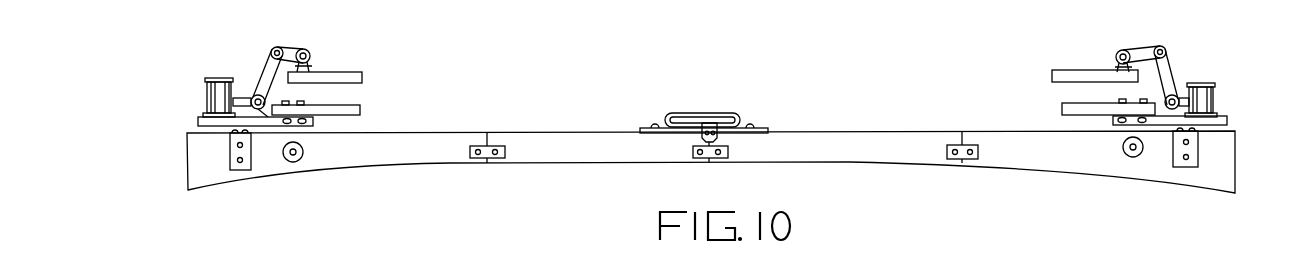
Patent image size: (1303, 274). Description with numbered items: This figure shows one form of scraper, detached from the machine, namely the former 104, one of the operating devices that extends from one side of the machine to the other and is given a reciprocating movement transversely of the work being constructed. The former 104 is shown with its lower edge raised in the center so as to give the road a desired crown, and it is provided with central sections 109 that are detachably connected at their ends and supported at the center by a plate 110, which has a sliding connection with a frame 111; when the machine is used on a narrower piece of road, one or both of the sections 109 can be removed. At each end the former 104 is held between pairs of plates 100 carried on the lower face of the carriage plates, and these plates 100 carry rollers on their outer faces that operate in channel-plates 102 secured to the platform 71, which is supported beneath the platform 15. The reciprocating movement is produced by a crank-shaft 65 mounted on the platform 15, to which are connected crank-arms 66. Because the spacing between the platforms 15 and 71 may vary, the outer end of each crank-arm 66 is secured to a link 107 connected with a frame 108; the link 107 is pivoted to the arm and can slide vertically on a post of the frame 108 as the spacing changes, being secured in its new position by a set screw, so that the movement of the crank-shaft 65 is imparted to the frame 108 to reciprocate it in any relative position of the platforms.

The platform 15 is at (355, 76).
The crank-shaft 65 is at (1154, 50).
The crank-arms 66 is at (265, 72).
The platform 71 is at (1060, 110).
The plates 100 is at (232, 170).
The channel-plates 102 is at (1227, 120).
The former 104 is at (203, 158).
The link 107 is at (250, 126).
The frame 108 is at (205, 93).
The central sections 109 is at (612, 157).
The plate 110 is at (707, 122).
The frame 111 is at (678, 113).